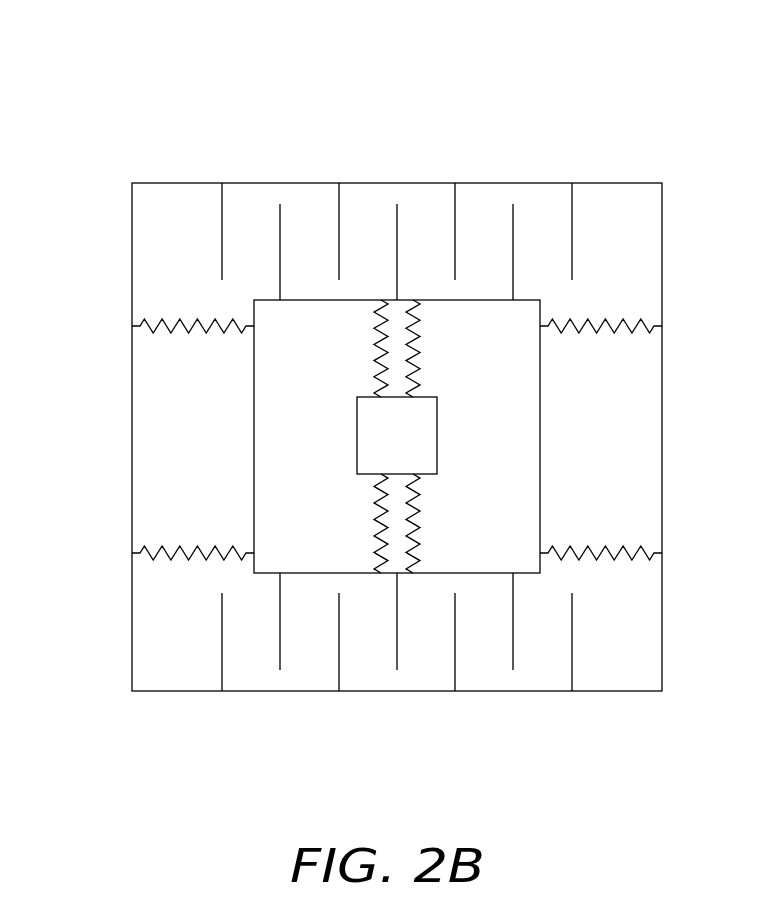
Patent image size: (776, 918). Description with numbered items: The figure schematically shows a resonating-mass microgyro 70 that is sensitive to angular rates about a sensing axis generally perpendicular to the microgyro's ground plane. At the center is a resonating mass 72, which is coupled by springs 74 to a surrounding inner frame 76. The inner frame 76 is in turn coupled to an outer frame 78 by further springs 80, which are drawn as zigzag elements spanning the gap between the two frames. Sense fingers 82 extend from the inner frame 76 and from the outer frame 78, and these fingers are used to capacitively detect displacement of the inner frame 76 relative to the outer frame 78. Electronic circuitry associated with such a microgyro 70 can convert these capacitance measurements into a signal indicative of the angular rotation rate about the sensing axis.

The resonating-mass microgyro 70 is at (543, 69).
The resonating mass 72 is at (437, 433).
The springs 74 is at (375, 328).
The inner frame 76 is at (540, 437).
The outer frame 78 is at (662, 670).
The springs 80 is at (157, 330).
The sense fingers 82 is at (280, 257).